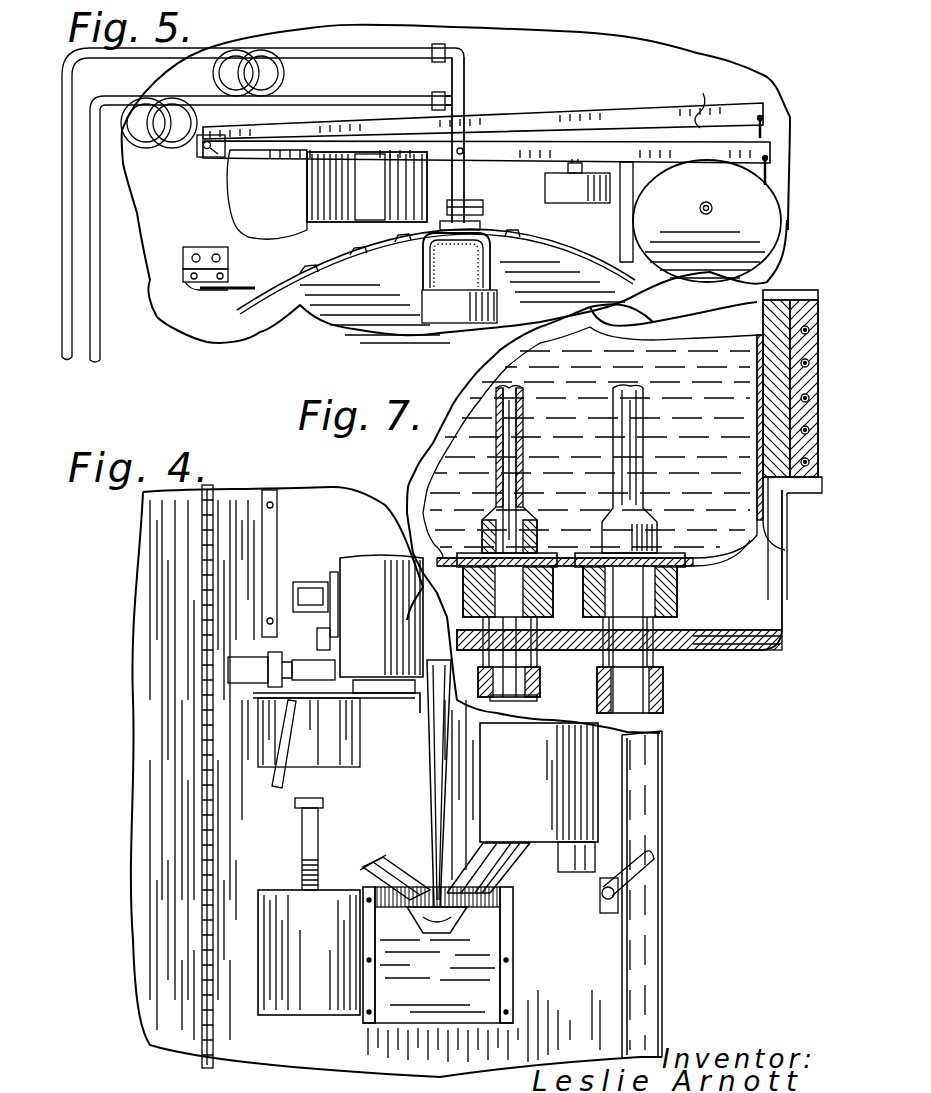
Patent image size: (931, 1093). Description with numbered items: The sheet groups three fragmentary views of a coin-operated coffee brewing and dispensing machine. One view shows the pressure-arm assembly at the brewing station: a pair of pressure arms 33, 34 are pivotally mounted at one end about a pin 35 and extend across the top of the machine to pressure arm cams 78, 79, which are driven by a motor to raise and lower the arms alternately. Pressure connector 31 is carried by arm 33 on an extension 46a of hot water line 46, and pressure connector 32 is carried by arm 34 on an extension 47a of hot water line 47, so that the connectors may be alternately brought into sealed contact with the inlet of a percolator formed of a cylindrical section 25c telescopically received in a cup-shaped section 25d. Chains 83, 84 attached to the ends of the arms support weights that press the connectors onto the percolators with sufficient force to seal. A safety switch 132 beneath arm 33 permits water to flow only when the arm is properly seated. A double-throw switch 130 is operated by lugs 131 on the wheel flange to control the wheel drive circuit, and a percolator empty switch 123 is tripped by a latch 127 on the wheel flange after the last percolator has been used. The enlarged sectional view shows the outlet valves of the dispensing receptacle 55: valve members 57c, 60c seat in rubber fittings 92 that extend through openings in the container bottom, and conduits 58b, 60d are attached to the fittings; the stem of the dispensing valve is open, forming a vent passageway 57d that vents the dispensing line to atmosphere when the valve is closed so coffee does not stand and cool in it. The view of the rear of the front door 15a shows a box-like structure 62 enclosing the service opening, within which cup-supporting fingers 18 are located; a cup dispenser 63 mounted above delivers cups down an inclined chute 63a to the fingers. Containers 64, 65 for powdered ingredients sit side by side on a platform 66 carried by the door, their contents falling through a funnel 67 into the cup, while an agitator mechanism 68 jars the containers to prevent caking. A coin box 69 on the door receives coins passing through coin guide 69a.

In FIG. 5, the pressure arm 33 is at (527, 143).
In FIG. 5, the pressure arm 34 is at (590, 120).
In FIG. 5, the pressure arm cam 79 is at (690, 99).
In FIG. 5, the chain 84 is at (763, 132).
In FIG. 5, the chain 83 is at (770, 173).
In FIG. 5, the pin 35 is at (200, 158).
In FIG. 5, the double-throw switch 130 is at (205, 247).
In FIG. 5, the lugs 131 is at (258, 288).
In FIG. 5, the percolator empty switch 123 is at (388, 191).
In FIG. 5, the latches 127 is at (398, 232).
In FIG. 5, the extension of hot water line 46a is at (455, 192).
In FIG. 5, the extension of hot water line 47a is at (467, 195).
In FIG. 5, the pressure connector 32 is at (484, 205).
In FIG. 5, the pressure connector 31 is at (481, 226).
In FIG. 5, the safety switch 132 is at (570, 205).
In FIG. 5, the pressure arm cam 78 is at (655, 235).
In FIG. 5, the percolator section 25c is at (491, 277).
In FIG. 5, the percolator section 25d is at (495, 305).
In FIG. 5, the conduit 46 is at (100, 333).
In FIG. 5, the conduit 47 is at (67, 356).
In FIG. 7, the vent passageway 57d is at (510, 463).
In FIG. 7, the valve member 57c is at (530, 500).
In FIG. 7, the rubber fittings 92 is at (537, 550).
In FIG. 7, the valve member 60c is at (667, 530).
In FIG. 7, the receptacle 55 is at (737, 563).
In FIG. 7, the hose 58b is at (541, 682).
In FIG. 7, the conduit 60d is at (665, 672).
In FIG. 4, the container 64 is at (330, 553).
In FIG. 4, the container 65 is at (387, 563).
In FIG. 4, the agitator mechanism 68 is at (315, 582).
In FIG. 4, the platform 66 is at (387, 700).
In FIG. 4, the funnel 67 is at (430, 770).
In FIG. 4, the coin guide 69a is at (310, 837).
In FIG. 4, the coin box 69 is at (277, 980).
In FIG. 4, the fingers 18 is at (423, 917).
In FIG. 4, the box-like structure 62 is at (487, 978).
In FIG. 4, the cup dispenser 63 is at (587, 775).
In FIG. 4, the inclined chute 63a is at (513, 867).
In FIG. 4, the front door 15a is at (617, 958).